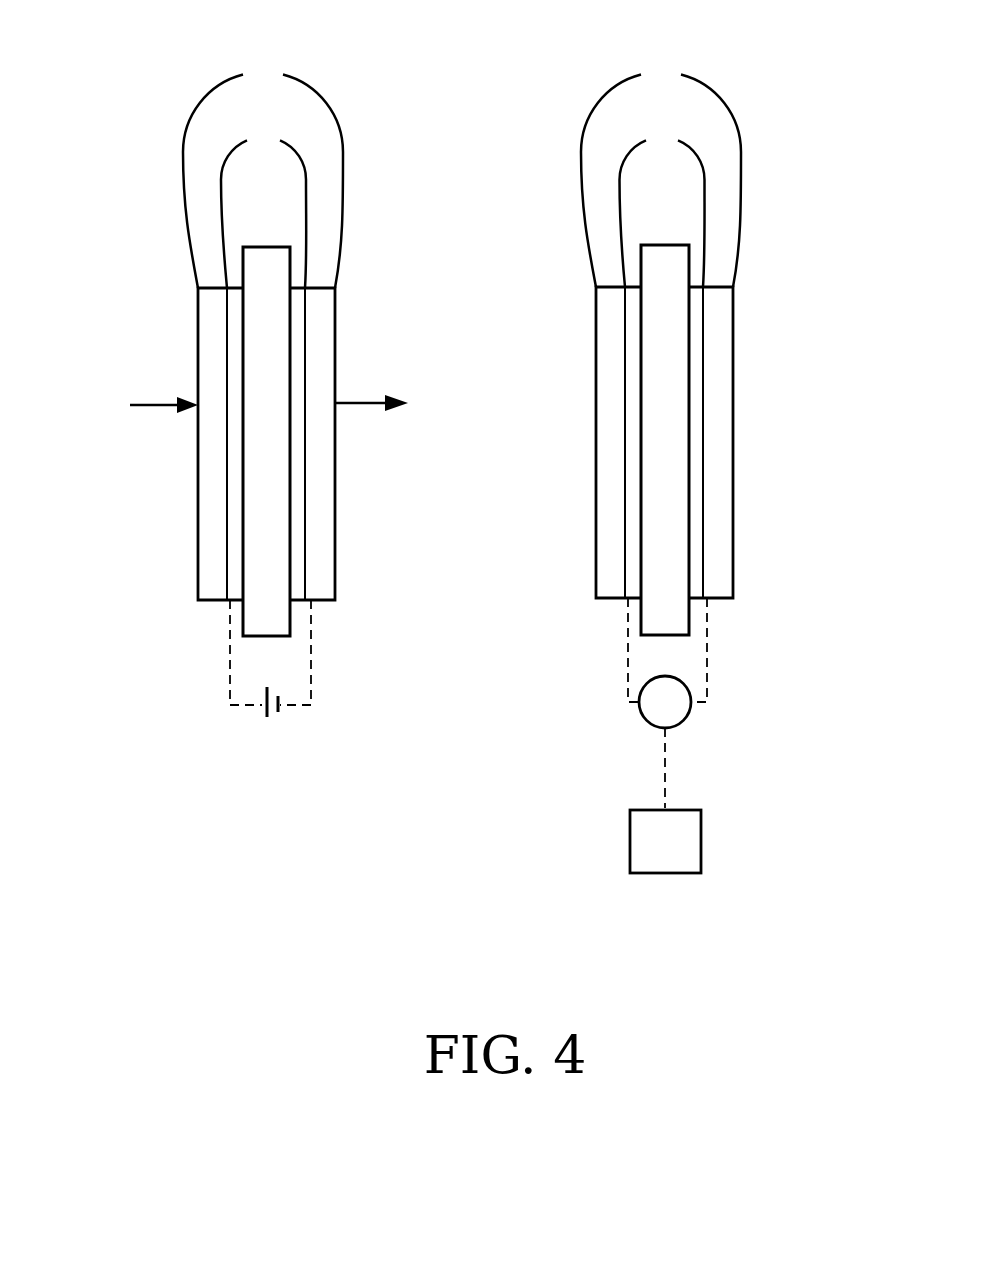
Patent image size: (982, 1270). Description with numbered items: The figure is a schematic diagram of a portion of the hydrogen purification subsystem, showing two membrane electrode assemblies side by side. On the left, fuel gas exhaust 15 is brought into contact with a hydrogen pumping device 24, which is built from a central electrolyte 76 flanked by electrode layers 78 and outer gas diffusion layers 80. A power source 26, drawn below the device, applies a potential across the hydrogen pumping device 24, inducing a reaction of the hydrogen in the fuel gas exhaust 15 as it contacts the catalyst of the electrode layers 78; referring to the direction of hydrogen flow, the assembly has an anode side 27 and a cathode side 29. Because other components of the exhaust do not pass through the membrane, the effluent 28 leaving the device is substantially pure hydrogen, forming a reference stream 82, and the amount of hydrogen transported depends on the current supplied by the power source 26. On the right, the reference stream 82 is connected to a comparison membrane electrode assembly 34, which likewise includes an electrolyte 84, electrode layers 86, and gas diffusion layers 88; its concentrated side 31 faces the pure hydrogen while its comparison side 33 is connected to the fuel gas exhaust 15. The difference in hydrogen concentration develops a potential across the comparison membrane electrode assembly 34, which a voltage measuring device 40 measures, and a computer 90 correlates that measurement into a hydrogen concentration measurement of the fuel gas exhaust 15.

The fuel gas exhaust 15 is at (87, 387).
The hydrogen pumping device 24 is at (170, 537).
The power source 26 is at (251, 713).
The anode side 27 is at (148, 335).
The effluent 28 is at (446, 385).
The cathode side 29 is at (350, 335).
The concentrated side 31 is at (548, 333).
The comparison side 33 is at (772, 333).
The comparison membrane electrode assembly 34 is at (790, 531).
The voltage measuring device 40 is at (690, 712).
The electrolyte 76 is at (261, 247).
The electrode layers 78 is at (263, 360).
The gas diffusion layers 80 is at (263, 172).
The reference stream 82 is at (411, 538).
The electrolyte 84 is at (658, 245).
The electrode layers 86 is at (661, 359).
The gas diffusion layers 88 is at (661, 172).
The computer 90 is at (650, 860).